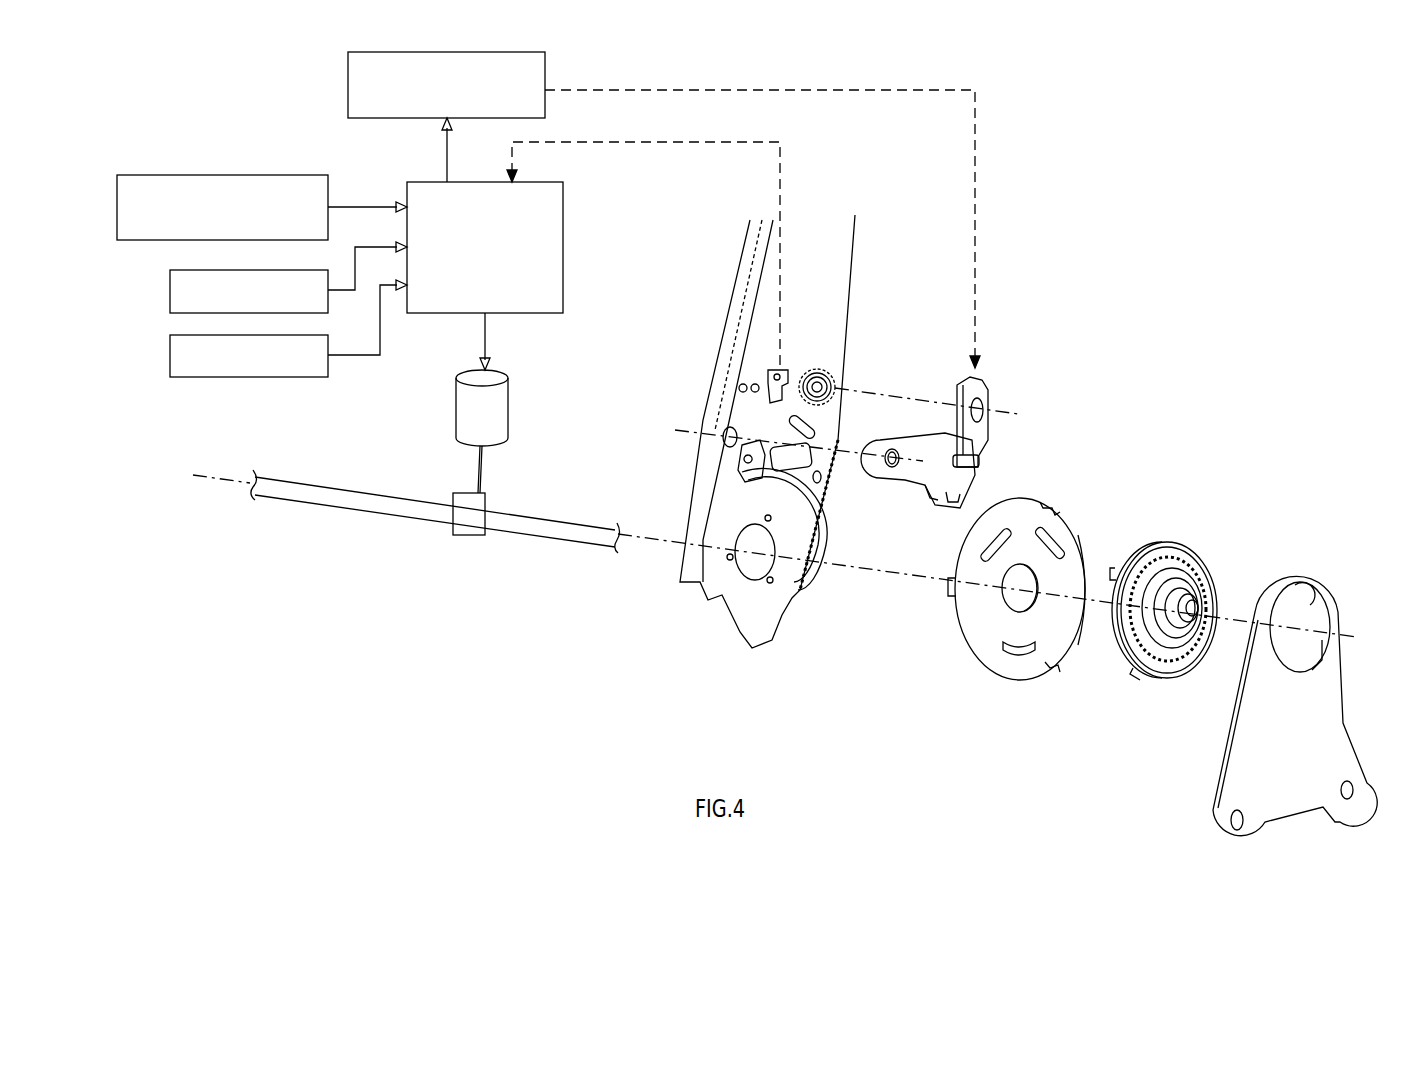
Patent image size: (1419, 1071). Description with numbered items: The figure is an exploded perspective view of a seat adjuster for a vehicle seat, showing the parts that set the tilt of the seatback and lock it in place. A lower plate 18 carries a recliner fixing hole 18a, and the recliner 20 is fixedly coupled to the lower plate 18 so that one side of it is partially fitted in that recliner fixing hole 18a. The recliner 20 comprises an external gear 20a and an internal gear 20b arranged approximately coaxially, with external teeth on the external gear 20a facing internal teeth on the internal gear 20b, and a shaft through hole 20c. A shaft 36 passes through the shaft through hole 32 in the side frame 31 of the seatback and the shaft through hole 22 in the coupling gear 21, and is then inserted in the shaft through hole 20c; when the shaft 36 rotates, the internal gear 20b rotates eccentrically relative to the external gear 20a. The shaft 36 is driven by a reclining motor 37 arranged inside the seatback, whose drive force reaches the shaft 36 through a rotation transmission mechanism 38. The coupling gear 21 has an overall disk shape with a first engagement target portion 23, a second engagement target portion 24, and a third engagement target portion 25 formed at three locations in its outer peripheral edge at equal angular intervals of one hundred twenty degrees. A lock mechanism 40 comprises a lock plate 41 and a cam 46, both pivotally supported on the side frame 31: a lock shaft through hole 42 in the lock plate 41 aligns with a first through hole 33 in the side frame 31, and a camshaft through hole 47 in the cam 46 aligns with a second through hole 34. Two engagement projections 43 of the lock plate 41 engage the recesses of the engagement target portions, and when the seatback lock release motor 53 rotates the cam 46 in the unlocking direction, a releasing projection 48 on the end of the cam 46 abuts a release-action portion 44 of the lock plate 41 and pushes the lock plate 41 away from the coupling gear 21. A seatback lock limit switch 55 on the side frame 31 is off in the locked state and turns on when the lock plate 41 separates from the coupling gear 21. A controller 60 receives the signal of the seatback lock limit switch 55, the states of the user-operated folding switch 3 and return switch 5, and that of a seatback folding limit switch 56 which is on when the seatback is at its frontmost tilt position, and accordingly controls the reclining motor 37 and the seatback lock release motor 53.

The seatback lock release motor 53 is at (348, 85).
The seatback folding limit switch 56 is at (188, 175).
The folding switch 3 is at (188, 270).
The return switch 5 is at (188, 335).
The controller 60 is at (563, 222).
The reclining motor 37 is at (508, 405).
The shaft 36 is at (372, 510).
The rotation transmission mechanism 38 is at (468, 537).
The side frame 31 is at (855, 250).
The shaft through hole 32 is at (750, 535).
The first through hole 33 is at (724, 430).
The second through hole 34 is at (815, 372).
The seatback lock limit switch 55 is at (773, 368).
The lock mechanism 40 is at (1024, 397).
The release-action portion 44 is at (940, 420).
The lock shaft through hole 42 is at (886, 470).
The lock plate 41 is at (905, 488).
The engagement projections 43 is at (945, 500).
The cam 46 is at (965, 378).
The camshaft through hole 47 is at (985, 395).
The releasing projection 48 is at (978, 455).
The coupling gear 21 is at (1080, 530).
The shaft through hole 22 is at (1012, 600).
The first engagement target portion 23 is at (1056, 498).
The second engagement target portion 24 is at (944, 603).
The third engagement target portion 25 is at (1064, 669).
The recliner 20 is at (1180, 545).
The external gear 20a is at (1180, 655).
The internal gear 20b is at (1165, 660).
The shaft through hole 20c is at (1220, 600).
The lower plate 18 is at (1345, 705).
The recliner fixing hole 18a is at (1298, 595).